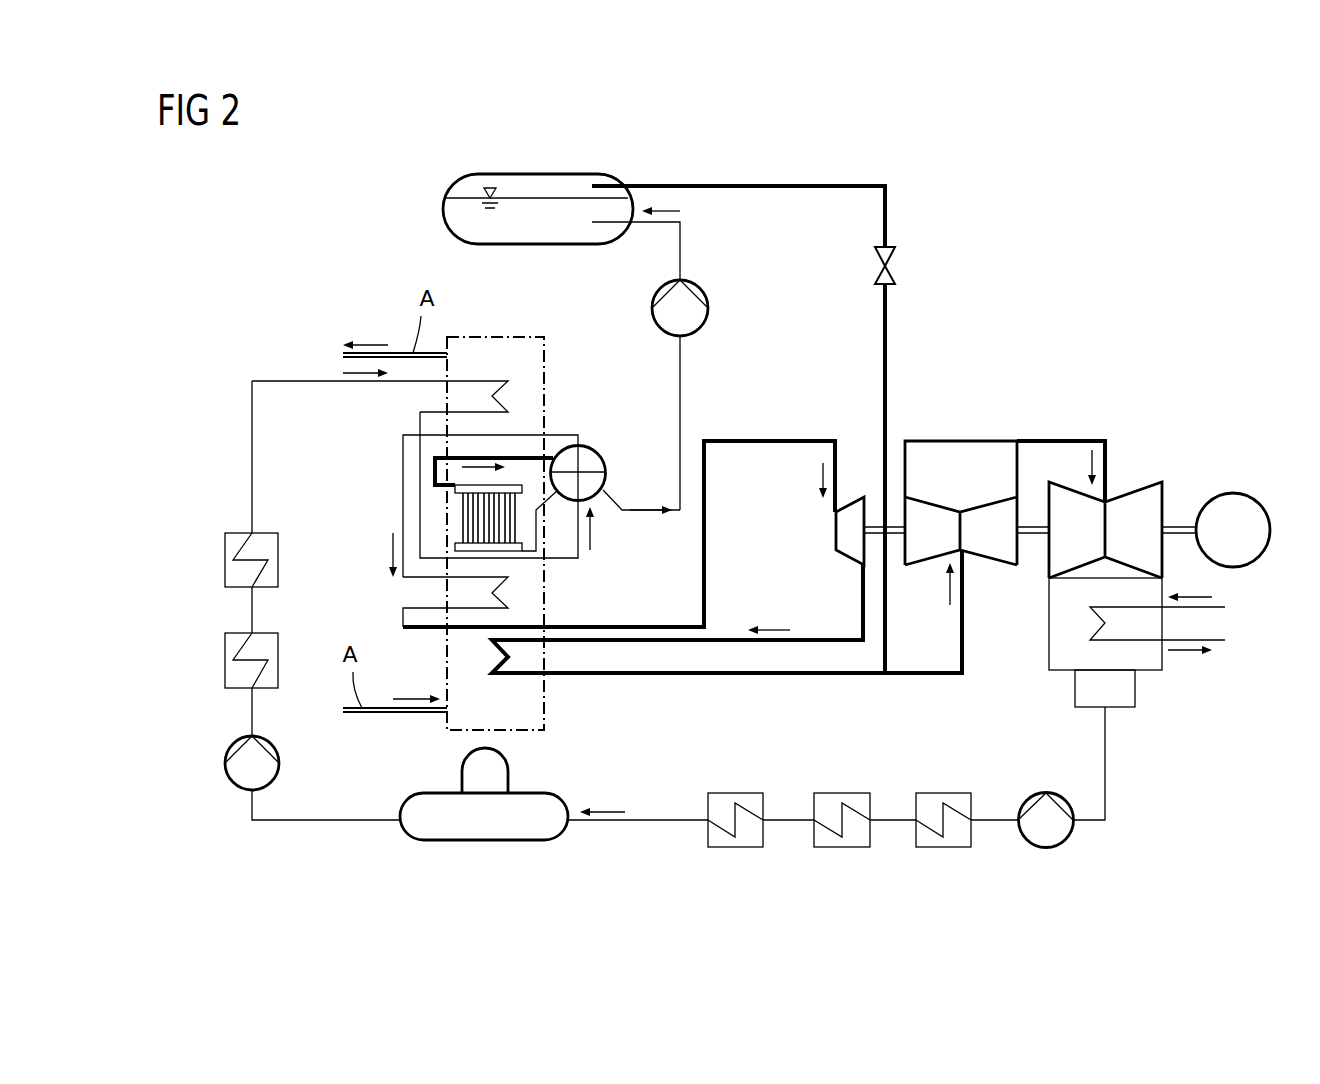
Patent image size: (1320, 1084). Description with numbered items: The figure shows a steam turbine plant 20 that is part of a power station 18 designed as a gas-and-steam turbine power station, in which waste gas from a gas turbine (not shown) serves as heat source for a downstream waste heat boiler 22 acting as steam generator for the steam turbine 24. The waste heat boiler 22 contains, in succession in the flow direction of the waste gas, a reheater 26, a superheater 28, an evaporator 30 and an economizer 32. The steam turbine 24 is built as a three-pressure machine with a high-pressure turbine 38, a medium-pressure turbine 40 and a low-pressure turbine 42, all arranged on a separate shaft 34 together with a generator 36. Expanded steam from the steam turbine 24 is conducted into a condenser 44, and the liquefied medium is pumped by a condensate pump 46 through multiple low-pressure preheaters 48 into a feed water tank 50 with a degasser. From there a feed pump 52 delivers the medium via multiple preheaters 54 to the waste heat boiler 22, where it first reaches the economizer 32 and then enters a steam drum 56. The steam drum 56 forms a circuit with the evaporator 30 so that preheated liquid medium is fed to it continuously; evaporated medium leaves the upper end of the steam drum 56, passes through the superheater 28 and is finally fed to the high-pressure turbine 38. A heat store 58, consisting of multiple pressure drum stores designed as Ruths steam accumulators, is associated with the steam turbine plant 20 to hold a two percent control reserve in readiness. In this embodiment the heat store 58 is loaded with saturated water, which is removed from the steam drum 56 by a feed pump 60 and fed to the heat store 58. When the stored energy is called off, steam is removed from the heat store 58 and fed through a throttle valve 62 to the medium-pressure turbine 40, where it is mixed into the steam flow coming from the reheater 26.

The power station 18 is at (1137, 233).
The steam turbine plant 20 is at (1035, 382).
The waste heat boiler 22 is at (507, 337).
The steam turbine 24 is at (1158, 462).
The reheater 26 is at (482, 657).
The superheater 28 is at (517, 597).
The evaporator 30 is at (463, 520).
The economizer 32 is at (517, 398).
The shaft 34 is at (1183, 520).
The generator 36 is at (1238, 493).
The high-pressure turbine 38 is at (845, 557).
The medium-pressure turbine 40 is at (990, 568).
The low-pressure turbine 42 is at (1125, 490).
The condenser 44 is at (1150, 673).
The condensate pump 46 is at (1050, 848).
The low-pressure preheaters 48 is at (736, 847).
The feed water tank 50 is at (485, 840).
The feed pump 52 is at (226, 765).
The preheaters 54 is at (225, 560).
The steam drum 56 is at (607, 472).
The heat store 58 is at (535, 172).
The feed pump 60 is at (708, 308).
The throttle valve 62 is at (890, 267).